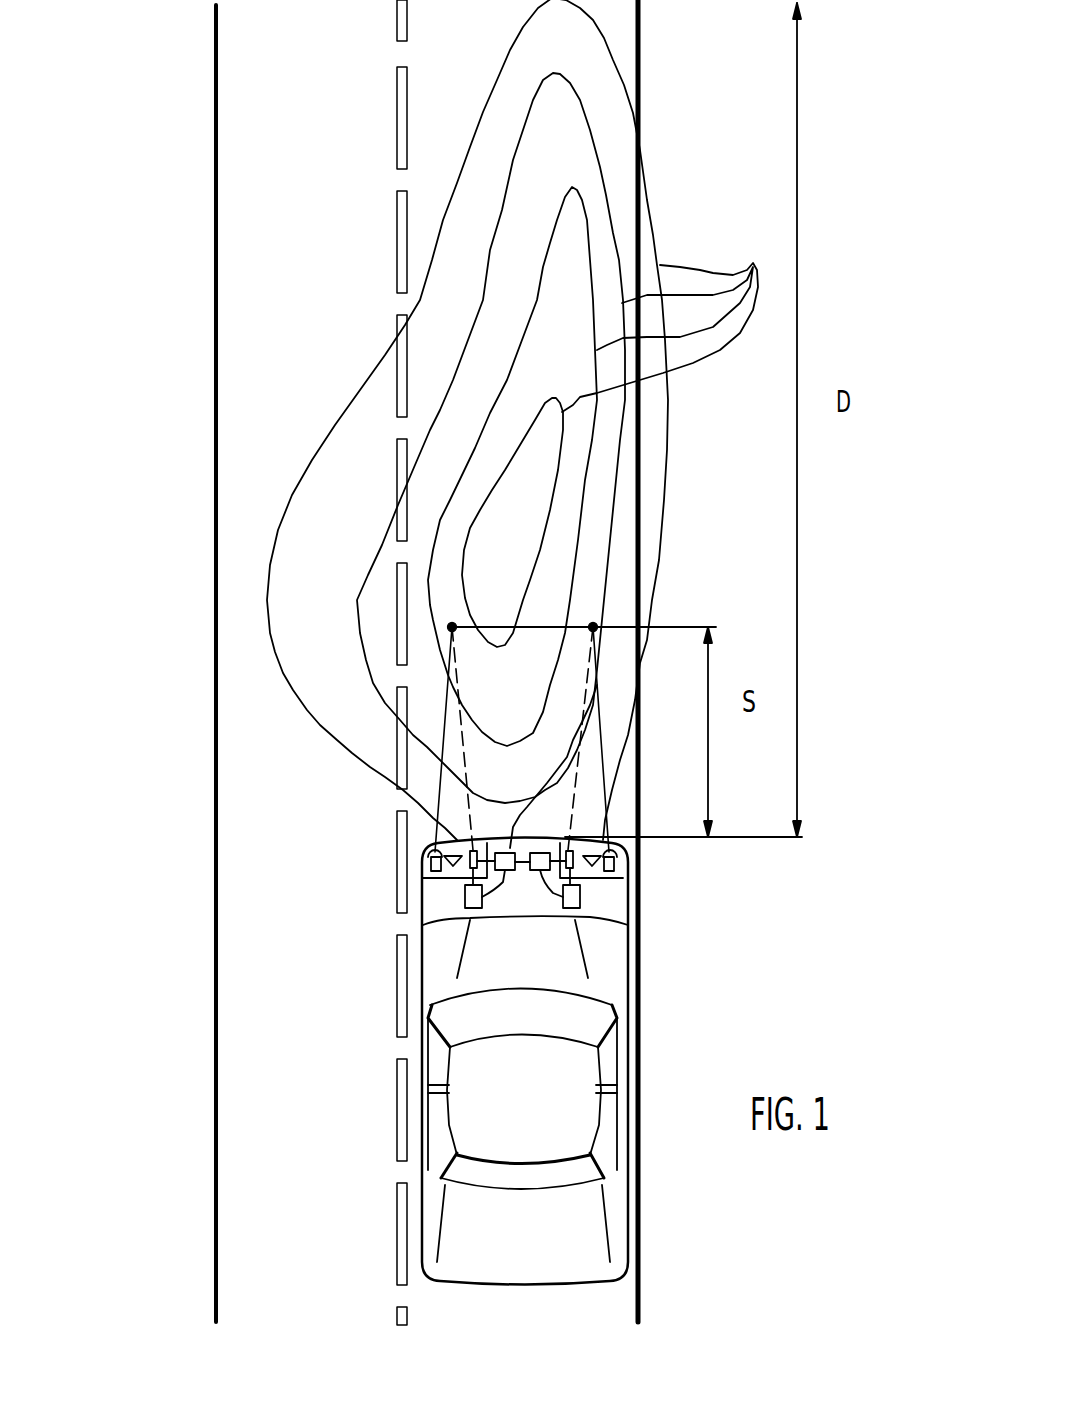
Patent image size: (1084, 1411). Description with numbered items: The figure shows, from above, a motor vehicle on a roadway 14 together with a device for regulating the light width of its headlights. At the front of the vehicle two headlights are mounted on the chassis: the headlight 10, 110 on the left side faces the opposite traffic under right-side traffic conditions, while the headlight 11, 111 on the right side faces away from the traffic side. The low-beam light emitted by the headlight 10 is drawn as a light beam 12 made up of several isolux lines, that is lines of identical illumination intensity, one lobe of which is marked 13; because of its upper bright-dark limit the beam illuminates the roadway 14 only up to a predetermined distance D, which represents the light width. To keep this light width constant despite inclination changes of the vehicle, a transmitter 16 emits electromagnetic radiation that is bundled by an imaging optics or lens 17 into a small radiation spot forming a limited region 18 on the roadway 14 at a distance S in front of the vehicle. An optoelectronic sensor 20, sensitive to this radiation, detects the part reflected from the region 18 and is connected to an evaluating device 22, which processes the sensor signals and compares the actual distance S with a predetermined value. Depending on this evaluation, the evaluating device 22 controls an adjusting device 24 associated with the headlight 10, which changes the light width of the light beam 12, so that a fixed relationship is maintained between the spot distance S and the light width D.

The headlight 10 is at (411, 898).
The first sensor unit 110 is at (478, 863).
The headlight 11 is at (640, 896).
The second sensor unit 111 is at (568, 865).
The light beam 12 is at (513, 424).
The gas cloud lobe 13 is at (752, 265).
The roadway 14 is at (244, 944).
The transmitter 16 is at (433, 864).
The imaging optics or lens 17 is at (434, 853).
The limited region 18 is at (595, 624).
The optoelectronic sensor 20 is at (472, 850).
The evaluating device 22 is at (562, 902).
The adjusting device 24 is at (536, 852).